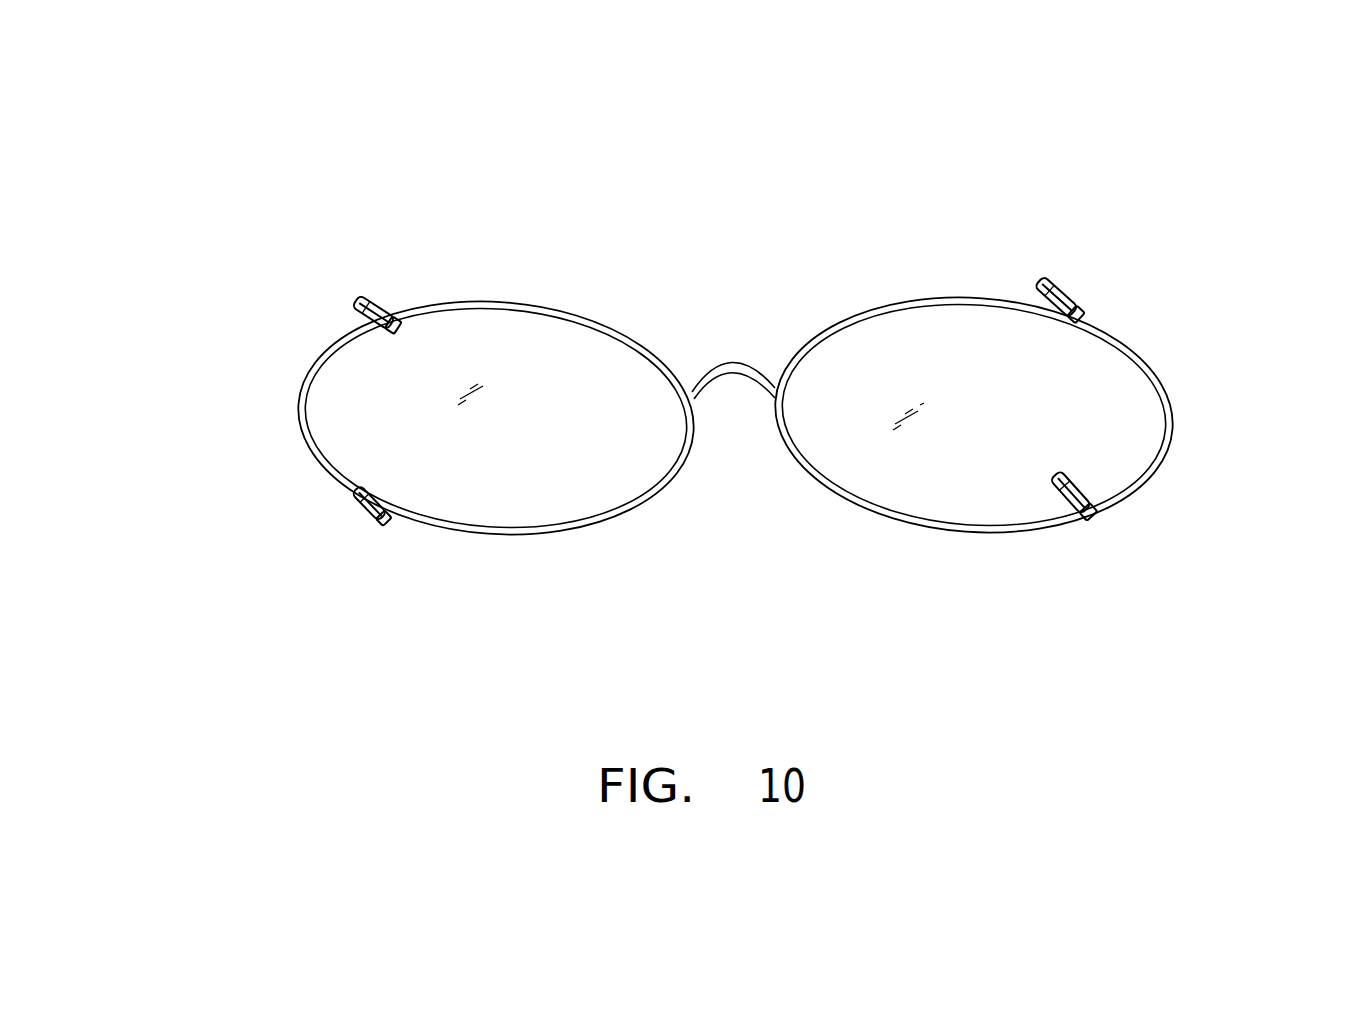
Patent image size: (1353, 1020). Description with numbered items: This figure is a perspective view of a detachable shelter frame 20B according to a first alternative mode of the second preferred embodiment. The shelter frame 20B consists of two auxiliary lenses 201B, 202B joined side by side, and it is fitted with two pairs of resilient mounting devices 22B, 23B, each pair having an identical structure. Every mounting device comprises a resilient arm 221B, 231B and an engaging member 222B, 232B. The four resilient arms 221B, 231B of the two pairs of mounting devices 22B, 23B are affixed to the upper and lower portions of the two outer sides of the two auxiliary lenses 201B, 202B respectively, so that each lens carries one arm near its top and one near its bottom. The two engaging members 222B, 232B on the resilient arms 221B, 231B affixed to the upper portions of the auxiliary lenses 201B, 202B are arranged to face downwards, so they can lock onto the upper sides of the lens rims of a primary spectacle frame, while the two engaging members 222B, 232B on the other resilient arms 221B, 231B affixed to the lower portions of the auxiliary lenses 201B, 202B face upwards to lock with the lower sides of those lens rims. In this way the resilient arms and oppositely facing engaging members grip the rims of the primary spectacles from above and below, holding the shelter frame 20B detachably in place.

The detachable shelter frame 20B is at (813, 147).
The auxiliary lens 201B is at (327, 413).
The auxiliary lens 202B is at (1127, 432).
The resilient mounting device 22B is at (370, 303).
The resilient arm 221B is at (377, 313).
The engaging member 222B is at (370, 322).
The resilient mounting device 23B is at (1053, 272).
The resilient arm 231B is at (1067, 300).
The engaging member 232B is at (1047, 298).